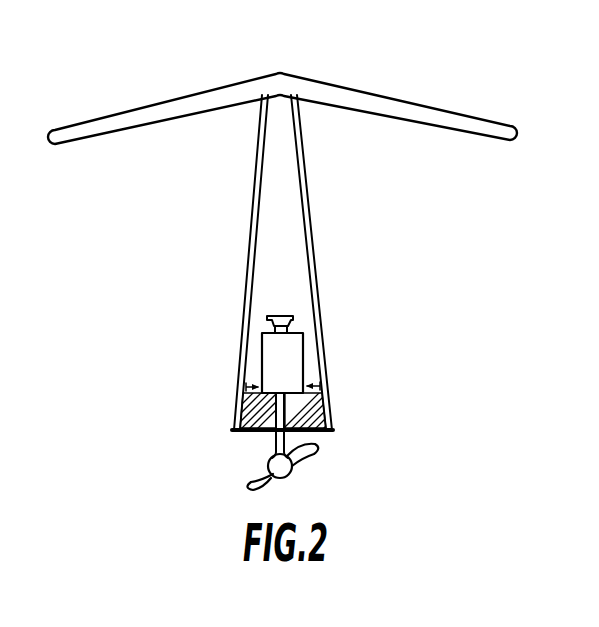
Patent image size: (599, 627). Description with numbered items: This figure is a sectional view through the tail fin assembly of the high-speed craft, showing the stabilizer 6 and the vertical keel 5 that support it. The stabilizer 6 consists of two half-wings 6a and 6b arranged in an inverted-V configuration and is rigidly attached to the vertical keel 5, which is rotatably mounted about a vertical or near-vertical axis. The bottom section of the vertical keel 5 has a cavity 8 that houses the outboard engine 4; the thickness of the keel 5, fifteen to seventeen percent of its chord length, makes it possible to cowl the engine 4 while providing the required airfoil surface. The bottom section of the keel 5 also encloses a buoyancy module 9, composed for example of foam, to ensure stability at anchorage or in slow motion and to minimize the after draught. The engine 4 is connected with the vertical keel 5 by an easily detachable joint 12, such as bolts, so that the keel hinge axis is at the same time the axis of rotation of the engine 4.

The engine 4 is at (272, 352).
The vertical keel 5 is at (316, 258).
The stabilizer 6 is at (324, 82).
The half-wing 6a is at (121, 113).
The half-wing 6b is at (436, 108).
The cavity 8 is at (260, 307).
The buoyancy module 9 is at (258, 432).
The easily detachable joint 12 is at (318, 376).